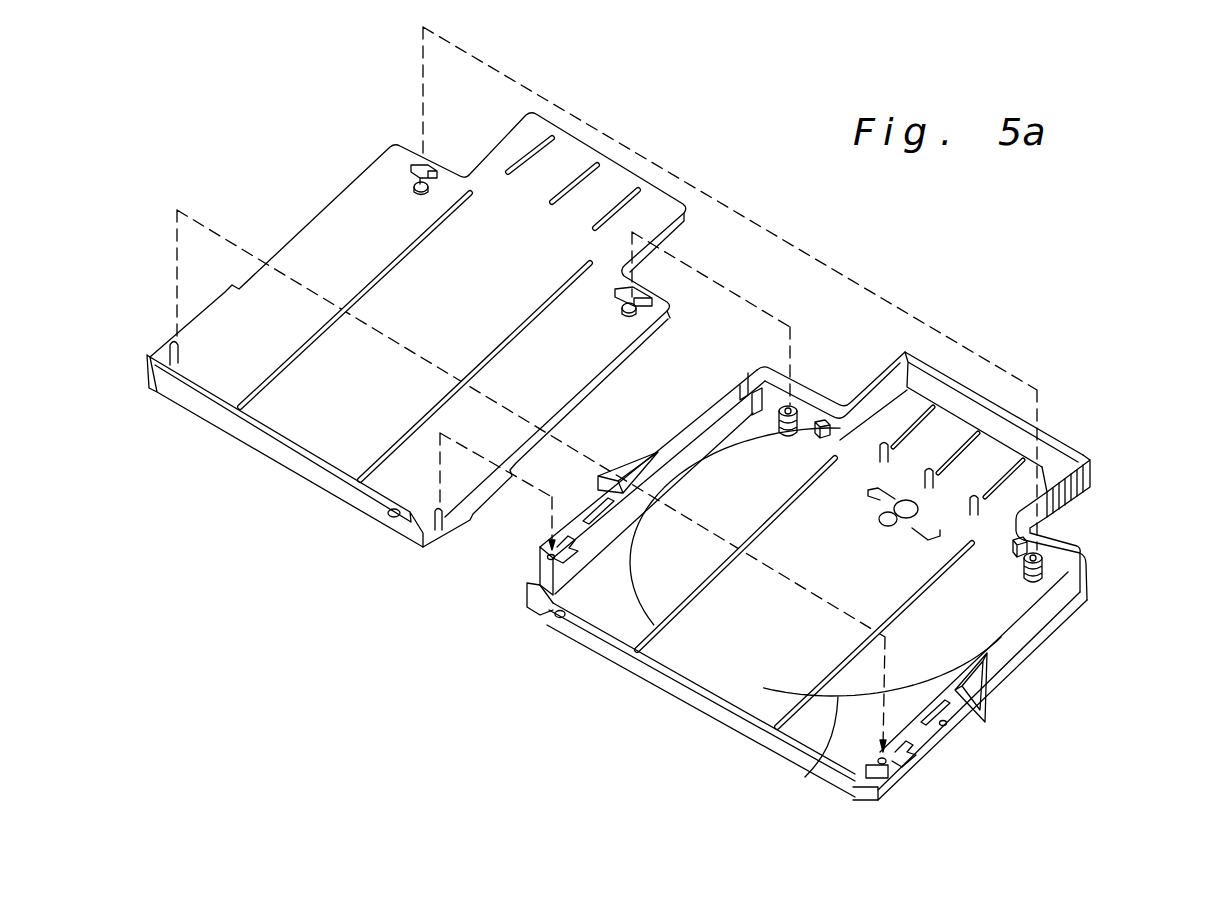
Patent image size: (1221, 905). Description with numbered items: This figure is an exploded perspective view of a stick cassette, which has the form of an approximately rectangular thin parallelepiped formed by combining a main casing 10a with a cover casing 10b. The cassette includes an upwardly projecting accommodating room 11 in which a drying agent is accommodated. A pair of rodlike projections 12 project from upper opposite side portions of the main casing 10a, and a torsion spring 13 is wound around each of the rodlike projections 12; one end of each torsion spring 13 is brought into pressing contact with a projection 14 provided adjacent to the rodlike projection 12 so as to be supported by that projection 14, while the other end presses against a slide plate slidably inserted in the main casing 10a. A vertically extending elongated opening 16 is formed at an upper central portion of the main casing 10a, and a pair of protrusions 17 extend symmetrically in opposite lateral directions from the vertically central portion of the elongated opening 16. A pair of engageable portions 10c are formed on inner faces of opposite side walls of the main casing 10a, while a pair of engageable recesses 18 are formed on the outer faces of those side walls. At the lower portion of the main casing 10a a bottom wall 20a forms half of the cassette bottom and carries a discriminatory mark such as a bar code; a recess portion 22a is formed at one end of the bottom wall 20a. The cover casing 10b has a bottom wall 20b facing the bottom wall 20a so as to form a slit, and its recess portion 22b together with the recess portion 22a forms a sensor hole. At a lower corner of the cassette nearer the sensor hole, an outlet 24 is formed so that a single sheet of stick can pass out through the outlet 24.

The main casing 10a is at (1020, 638).
The cover casing 10b is at (340, 213).
The engageable portion 10c is at (747, 370).
The accommodating room 11 is at (953, 433).
The rodlike projection 12 is at (792, 405).
The torsion spring 13 is at (600, 625).
The projection 14 is at (825, 422).
The elongated opening 16 is at (890, 527).
The protrusion 17 is at (870, 507).
The engageable recess 18 is at (947, 724).
The bottom wall 20a is at (690, 693).
The bottom wall 20b is at (277, 450).
The recess portion 22a is at (553, 618).
The recess portion 22b is at (389, 518).
The outlet 24 is at (538, 575).